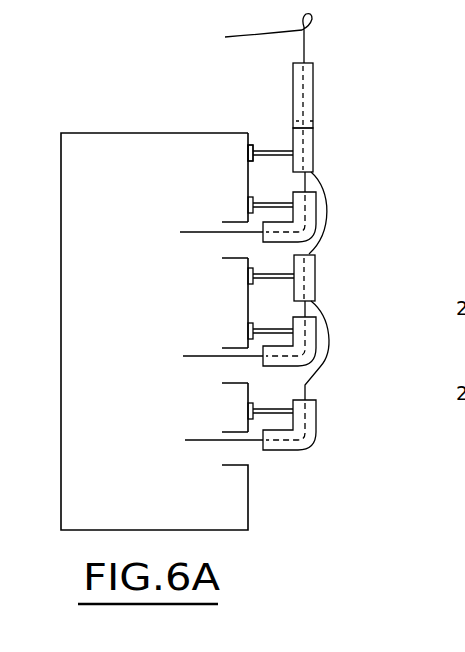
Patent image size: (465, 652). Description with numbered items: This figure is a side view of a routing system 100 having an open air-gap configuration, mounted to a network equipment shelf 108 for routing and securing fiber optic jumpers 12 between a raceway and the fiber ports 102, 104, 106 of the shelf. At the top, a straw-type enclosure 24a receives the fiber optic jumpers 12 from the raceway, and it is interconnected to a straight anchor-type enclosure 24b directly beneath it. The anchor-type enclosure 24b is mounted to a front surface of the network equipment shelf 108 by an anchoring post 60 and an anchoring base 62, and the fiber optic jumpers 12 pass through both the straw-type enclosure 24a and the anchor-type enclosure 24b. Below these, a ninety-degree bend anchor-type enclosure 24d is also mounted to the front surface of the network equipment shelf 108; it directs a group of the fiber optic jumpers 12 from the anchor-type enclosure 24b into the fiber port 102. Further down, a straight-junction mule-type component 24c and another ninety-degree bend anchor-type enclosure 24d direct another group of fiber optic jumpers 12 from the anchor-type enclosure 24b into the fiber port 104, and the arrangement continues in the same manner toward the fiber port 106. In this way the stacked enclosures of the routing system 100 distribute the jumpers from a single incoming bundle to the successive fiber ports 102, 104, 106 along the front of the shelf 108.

The fiber optic jumpers 12 is at (258, 35).
The straw-type enclosure 24a is at (313, 91).
The straight anchor-type enclosure 24b is at (313, 152).
The straight-junction mule-type component 24c is at (316, 280).
The 90° bend anchor-type enclosure 24d is at (322, 246).
The anchoring post 60 is at (281, 132).
The anchoring base 62 is at (257, 143).
The routing system 100 is at (394, 112).
The fiber port 102 is at (245, 262).
The fiber port 104 is at (245, 387).
The fiber port 106 is at (245, 469).
The network equipment shelf 108 is at (58, 195).